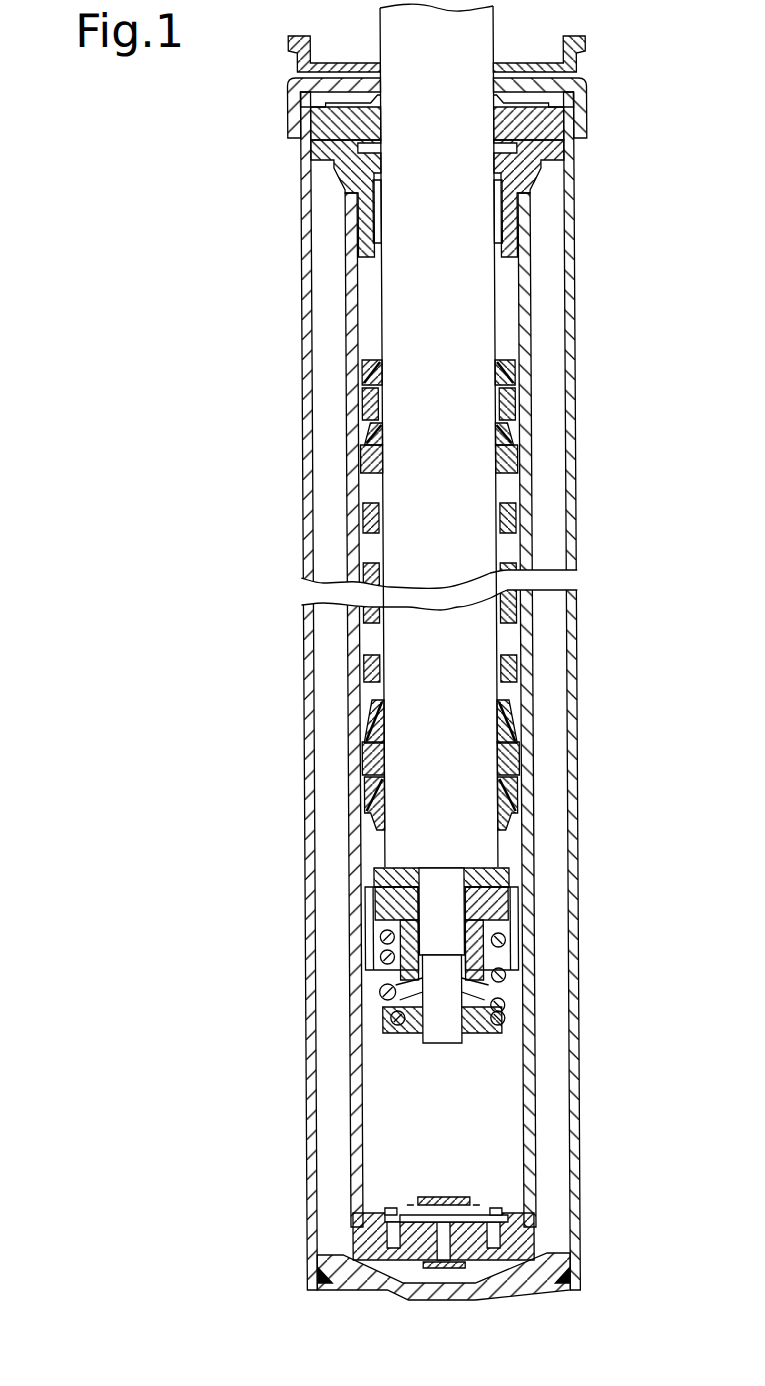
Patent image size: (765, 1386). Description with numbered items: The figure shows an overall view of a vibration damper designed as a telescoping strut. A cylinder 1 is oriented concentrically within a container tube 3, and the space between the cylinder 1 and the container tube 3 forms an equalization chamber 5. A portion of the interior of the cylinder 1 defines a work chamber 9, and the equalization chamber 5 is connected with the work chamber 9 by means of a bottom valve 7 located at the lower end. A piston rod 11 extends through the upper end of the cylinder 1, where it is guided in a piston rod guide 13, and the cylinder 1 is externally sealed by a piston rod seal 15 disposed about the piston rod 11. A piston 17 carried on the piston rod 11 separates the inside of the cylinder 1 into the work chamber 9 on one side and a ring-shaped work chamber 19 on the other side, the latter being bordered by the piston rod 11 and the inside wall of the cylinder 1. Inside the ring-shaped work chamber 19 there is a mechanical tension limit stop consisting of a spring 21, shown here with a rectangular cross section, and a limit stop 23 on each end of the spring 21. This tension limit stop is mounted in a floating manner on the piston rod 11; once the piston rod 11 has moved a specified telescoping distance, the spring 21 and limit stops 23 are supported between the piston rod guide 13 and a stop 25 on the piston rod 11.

The cylinder 1 is at (521, 288).
The container tube 3 is at (573, 445).
The equalization chamber 5 is at (325, 321).
The bottom valve 7 is at (496, 1237).
The work chamber 9 is at (497, 1090).
The piston rod 11 is at (401, 649).
The piston rod guide 13 is at (541, 147).
The piston rod seal 15 is at (543, 118).
The piston 17 is at (492, 938).
The ring-shaped work chamber 19 is at (366, 275).
The spring 21 is at (357, 458).
The limit stop 23 is at (506, 372).
The stop 25 is at (360, 810).